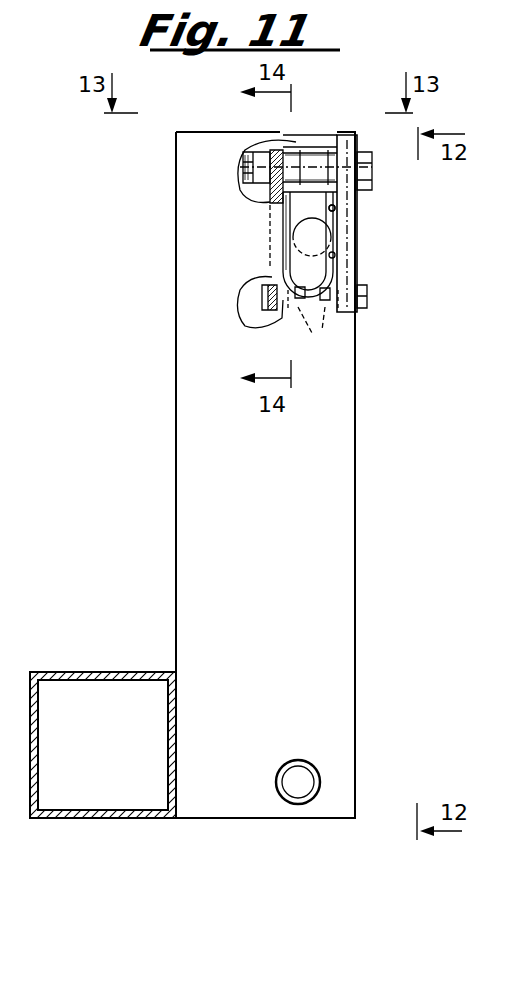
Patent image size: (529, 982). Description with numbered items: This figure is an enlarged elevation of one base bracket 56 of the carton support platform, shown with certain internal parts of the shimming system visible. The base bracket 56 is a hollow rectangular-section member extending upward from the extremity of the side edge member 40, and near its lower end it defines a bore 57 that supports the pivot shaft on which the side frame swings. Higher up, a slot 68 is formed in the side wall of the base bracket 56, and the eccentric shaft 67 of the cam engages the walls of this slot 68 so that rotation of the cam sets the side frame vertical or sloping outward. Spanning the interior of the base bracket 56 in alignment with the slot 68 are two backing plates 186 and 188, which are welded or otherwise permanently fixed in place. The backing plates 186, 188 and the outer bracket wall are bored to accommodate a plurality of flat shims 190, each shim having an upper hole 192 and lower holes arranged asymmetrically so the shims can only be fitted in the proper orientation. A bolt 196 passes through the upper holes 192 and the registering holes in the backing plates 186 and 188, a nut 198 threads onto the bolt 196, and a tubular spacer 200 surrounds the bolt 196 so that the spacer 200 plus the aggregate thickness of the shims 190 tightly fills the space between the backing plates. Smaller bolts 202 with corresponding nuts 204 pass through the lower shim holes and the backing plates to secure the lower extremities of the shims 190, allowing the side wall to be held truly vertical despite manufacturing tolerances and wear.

The side edge member 40 is at (72, 672).
The base bracket 56 is at (345, 488).
The bore 57 is at (297, 768).
The shaft 67 is at (335, 238).
The slot 68 is at (335, 208).
The backing plate 186 is at (276, 200).
The backing plate 188 is at (350, 274).
The flat shim 190 is at (282, 262).
The upper hole 192 is at (295, 168).
The bolt 196 is at (372, 183).
The nut 198 is at (243, 186).
The tubular spacer 200 is at (323, 160).
The smaller bolt 202 is at (262, 302).
The nut 204 is at (318, 315).